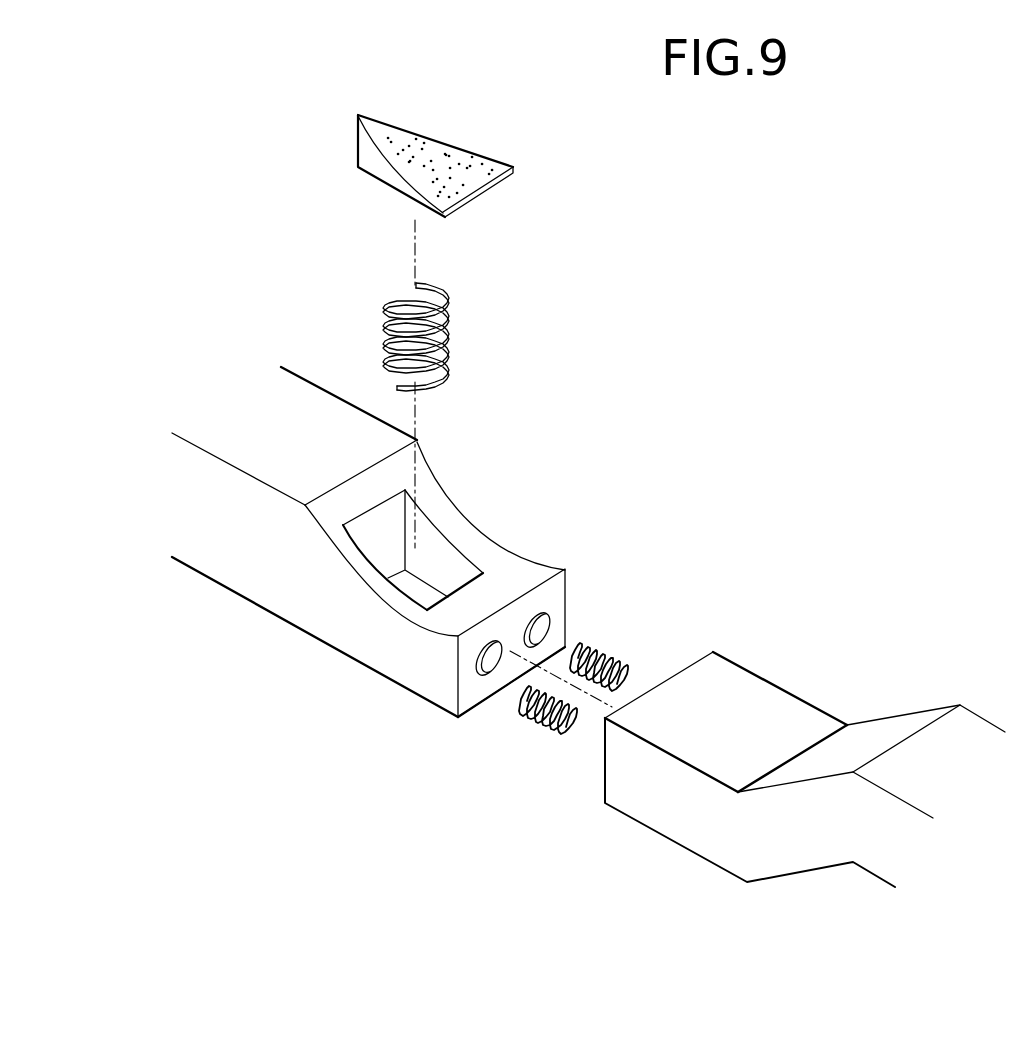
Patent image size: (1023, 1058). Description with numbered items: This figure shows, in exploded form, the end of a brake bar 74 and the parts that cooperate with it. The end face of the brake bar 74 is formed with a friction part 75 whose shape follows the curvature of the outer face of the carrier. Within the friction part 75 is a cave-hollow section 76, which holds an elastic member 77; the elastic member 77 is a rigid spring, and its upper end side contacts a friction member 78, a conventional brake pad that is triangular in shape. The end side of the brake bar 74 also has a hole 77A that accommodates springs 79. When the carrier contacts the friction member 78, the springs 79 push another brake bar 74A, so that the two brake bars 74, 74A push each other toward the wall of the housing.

The brake bar 74 is at (282, 577).
The another brake bar 74A is at (650, 787).
The friction part 75 is at (512, 577).
The cave-hollow section 76 is at (440, 565).
The elastic member 77 is at (445, 342).
The hole 77A is at (542, 632).
The friction member 78 is at (465, 185).
The springs 79 is at (580, 715).